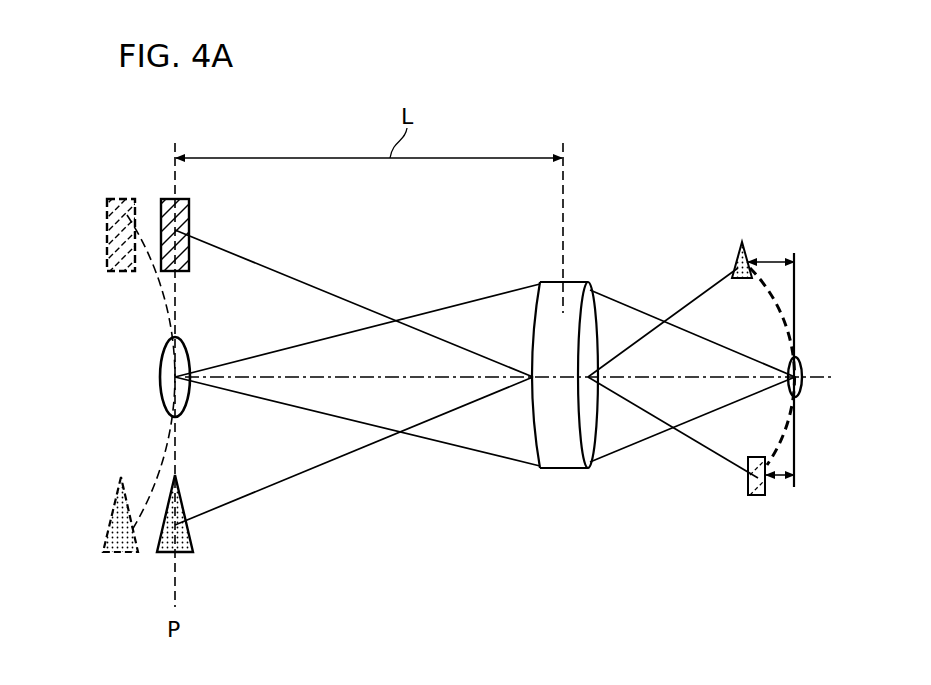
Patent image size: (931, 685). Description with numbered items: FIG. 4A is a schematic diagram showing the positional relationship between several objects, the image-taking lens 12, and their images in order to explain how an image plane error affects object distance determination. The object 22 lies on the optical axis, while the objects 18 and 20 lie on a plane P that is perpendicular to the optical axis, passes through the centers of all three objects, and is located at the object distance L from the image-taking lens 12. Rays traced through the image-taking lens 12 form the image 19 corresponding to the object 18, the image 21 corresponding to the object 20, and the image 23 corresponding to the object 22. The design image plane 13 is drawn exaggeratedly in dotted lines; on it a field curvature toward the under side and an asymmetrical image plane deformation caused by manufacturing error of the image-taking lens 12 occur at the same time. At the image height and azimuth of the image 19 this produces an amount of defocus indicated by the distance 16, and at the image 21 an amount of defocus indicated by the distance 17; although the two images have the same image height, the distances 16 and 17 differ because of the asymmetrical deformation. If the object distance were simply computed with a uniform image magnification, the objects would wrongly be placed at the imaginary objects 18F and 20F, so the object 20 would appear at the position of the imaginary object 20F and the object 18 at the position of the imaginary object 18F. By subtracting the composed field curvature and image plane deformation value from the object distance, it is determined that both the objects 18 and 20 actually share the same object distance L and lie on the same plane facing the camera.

The image-taking lens 12 is at (575, 282).
The design image plane 13 is at (783, 307).
The distance 16 is at (769, 262).
The distance 17 is at (780, 478).
The object 18 is at (192, 540).
The imaginary object 18F is at (108, 513).
The image 19 is at (735, 251).
The object 20 is at (189, 203).
The imaginary object 20F is at (107, 226).
The image 21 is at (755, 497).
The object 22 is at (160, 372).
The image 23 is at (801, 367).